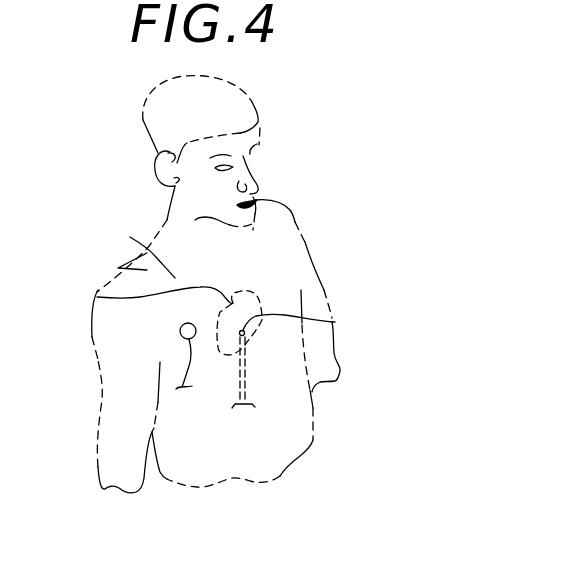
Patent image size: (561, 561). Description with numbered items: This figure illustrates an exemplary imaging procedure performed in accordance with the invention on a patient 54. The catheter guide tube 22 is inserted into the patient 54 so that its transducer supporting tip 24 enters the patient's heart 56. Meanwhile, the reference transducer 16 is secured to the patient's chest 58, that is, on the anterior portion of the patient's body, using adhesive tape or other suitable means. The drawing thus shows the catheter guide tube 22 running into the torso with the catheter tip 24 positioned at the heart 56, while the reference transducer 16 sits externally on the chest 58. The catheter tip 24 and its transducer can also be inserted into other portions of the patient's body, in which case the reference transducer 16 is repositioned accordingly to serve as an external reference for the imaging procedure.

The patient 54 is at (325, 290).
The patient's chest 58 is at (130, 237).
The patient's heart 56 is at (97, 297).
The reference transducer 16 is at (180, 331).
The transducer supporting tip 24 is at (335, 322).
The catheter guide tube 22 is at (245, 377).